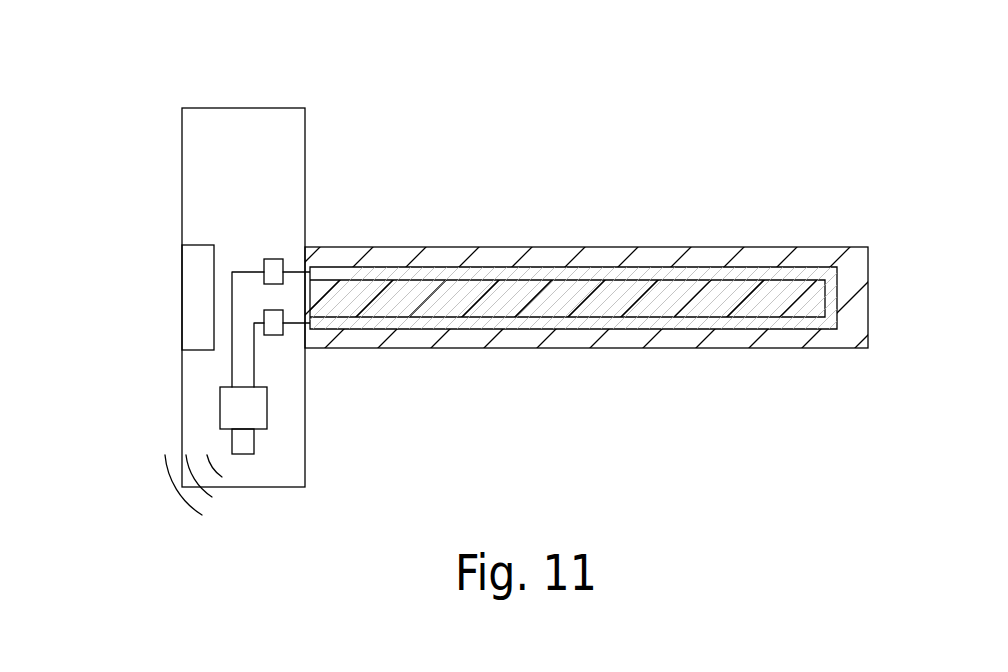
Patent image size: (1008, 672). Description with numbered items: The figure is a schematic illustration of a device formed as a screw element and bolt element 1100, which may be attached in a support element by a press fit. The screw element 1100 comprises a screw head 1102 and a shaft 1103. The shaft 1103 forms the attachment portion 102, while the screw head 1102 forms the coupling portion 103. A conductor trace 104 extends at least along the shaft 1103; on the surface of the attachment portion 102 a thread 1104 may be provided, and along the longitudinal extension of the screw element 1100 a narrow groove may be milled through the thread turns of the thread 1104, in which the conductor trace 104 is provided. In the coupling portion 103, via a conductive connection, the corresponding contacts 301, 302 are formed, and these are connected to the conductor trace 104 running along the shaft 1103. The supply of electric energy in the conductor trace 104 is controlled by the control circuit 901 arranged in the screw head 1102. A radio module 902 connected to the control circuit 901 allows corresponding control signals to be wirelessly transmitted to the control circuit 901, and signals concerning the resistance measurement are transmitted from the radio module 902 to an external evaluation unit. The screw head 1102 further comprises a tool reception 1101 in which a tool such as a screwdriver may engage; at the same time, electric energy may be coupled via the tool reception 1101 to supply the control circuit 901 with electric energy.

The screw element 1100 is at (505, 293).
The coupling portion 103 is at (235, 259).
The screw head 1102 is at (240, 108).
The tool reception 1101 is at (193, 302).
The contact 301 is at (274, 259).
The contact 302 is at (272, 335).
The control circuit 901 is at (220, 408).
The radio module 902 is at (247, 448).
The attachment portion 102 is at (534, 255).
The shaft 1103 is at (702, 247).
The thread 1104 is at (500, 293).
The conductor trace 104 is at (637, 323).